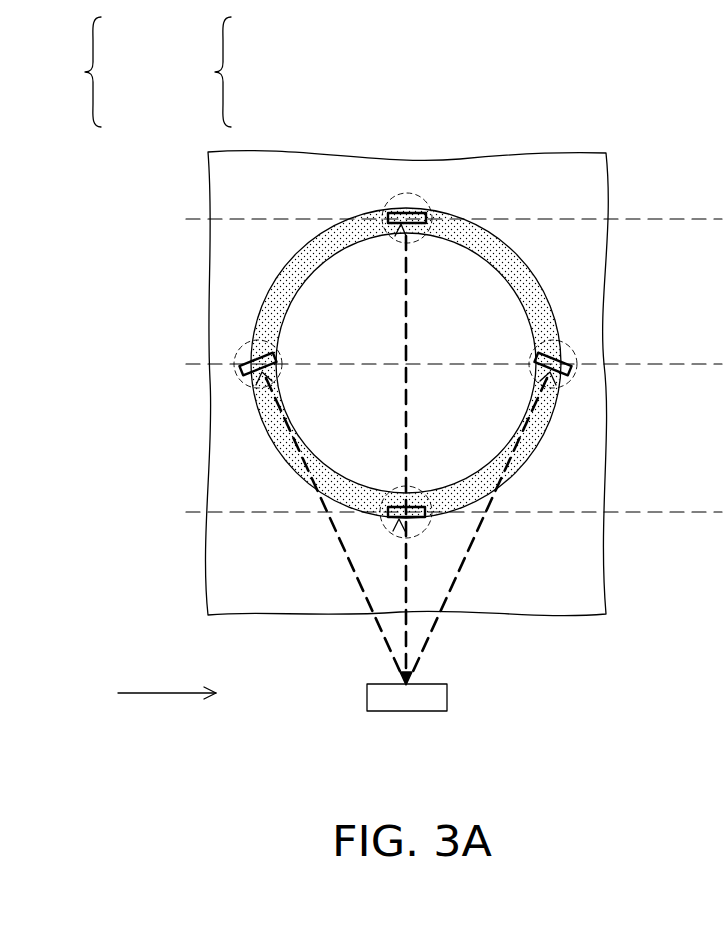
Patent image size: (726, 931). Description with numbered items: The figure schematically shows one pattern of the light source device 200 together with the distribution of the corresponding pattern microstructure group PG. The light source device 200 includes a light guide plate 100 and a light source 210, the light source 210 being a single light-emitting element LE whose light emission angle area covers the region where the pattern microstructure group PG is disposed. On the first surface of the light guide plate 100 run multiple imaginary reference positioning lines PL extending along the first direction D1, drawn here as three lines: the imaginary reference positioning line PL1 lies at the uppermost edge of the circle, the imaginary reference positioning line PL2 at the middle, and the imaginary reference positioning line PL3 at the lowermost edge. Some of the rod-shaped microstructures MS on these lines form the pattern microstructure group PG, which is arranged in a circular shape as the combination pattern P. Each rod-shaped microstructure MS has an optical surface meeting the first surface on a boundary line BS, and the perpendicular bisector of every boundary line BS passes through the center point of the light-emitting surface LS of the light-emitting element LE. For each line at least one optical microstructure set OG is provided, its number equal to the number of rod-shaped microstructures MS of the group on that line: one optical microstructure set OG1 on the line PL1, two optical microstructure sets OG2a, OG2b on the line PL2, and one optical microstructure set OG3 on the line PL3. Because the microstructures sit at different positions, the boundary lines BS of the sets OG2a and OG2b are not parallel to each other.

The light guide plate 100 is at (592, 173).
The light source device 200 is at (663, 686).
The light source 210 is at (393, 716).
The light-emitting element LE is at (427, 697).
The light-emitting surface LS is at (432, 672).
The rod-shaped microstructure MS is at (421, 194).
The boundary line BS is at (394, 230).
The pattern microstructure group PG is at (283, 350).
The combination pattern P is at (280, 438).
The imaginary reference positioning line PL1 is at (432, 217).
The imaginary reference positioning line PL2 is at (432, 366).
The imaginary reference positioning line PL3 is at (432, 512).
The imaginary reference positioning lines PL is at (73, 72).
The optical microstructure set OG is at (204, 72).
The optical microstructure set OG1 is at (260, 34).
The optical microstructure set OG2a is at (266, 72).
The optical microstructure set OG2b is at (327, 72).
The optical microstructure set OG3 is at (260, 110).
The first direction D1 is at (167, 672).